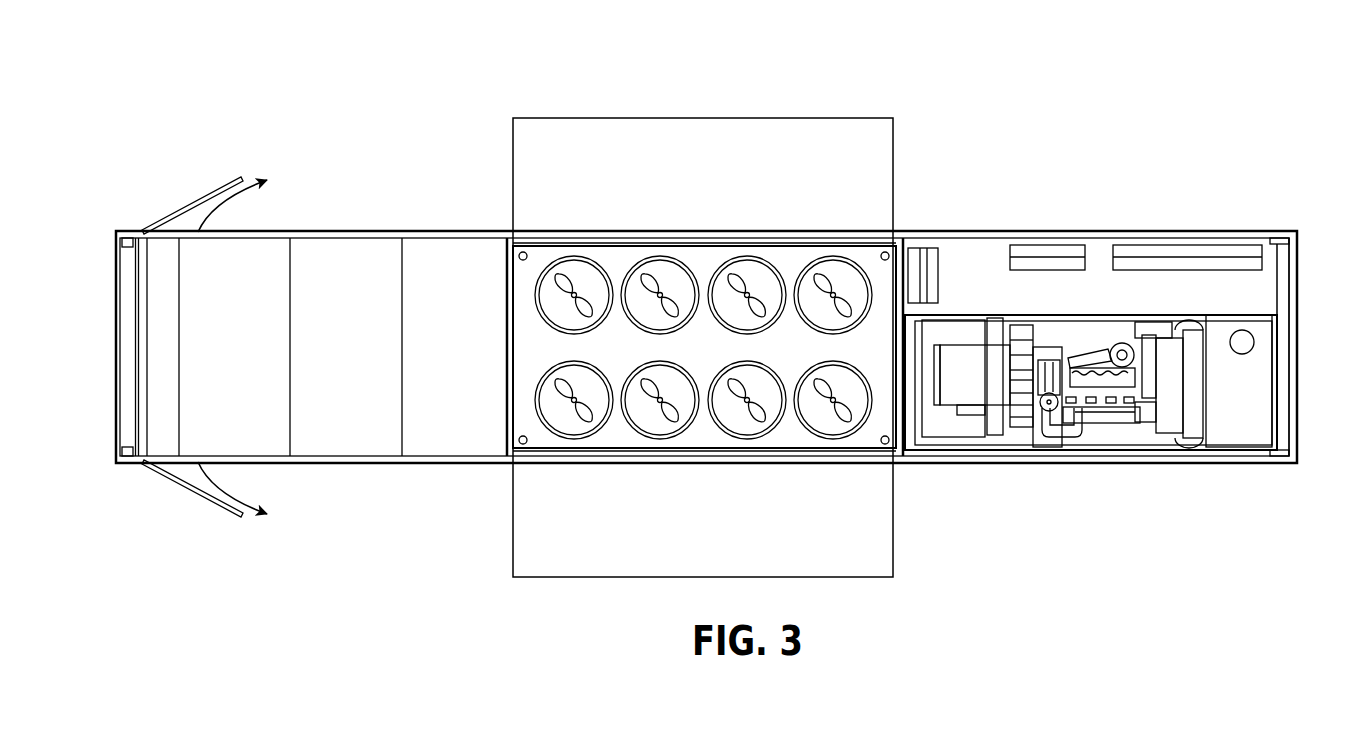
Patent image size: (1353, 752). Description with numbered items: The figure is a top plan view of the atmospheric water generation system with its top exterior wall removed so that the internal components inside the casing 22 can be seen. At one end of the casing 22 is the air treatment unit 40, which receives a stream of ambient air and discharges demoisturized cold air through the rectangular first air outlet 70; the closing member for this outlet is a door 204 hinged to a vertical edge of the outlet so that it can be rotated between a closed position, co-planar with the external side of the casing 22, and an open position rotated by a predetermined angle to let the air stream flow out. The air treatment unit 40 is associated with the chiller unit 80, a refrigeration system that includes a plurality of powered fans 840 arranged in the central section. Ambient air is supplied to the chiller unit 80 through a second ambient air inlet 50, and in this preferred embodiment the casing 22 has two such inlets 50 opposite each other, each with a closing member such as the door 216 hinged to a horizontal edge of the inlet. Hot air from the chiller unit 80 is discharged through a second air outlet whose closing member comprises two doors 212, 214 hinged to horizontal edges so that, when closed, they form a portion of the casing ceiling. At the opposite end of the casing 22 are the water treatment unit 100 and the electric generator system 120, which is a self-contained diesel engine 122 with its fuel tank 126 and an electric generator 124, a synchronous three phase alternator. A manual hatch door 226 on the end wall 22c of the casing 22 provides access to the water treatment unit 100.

The casing 22 is at (128, 468).
The end wall 22c is at (1297, 337).
The air treatment unit 40 is at (360, 262).
The second ambient air inlet 50 is at (681, 86).
The first air outlet 70 is at (225, 230).
The chiller unit 80 is at (705, 265).
The water treatment unit 100 is at (1172, 255).
The electric generator system 120 is at (1118, 425).
The diesel engine 122 is at (1170, 420).
The electric generator 124 is at (975, 388).
The fuel tank 126 is at (1250, 428).
The door 204 is at (192, 204).
The door 212 is at (788, 243).
The door 214 is at (787, 452).
The door 216 is at (728, 546).
The manual hatch door 226 is at (1300, 240).
The powered fans 840 is at (570, 282).